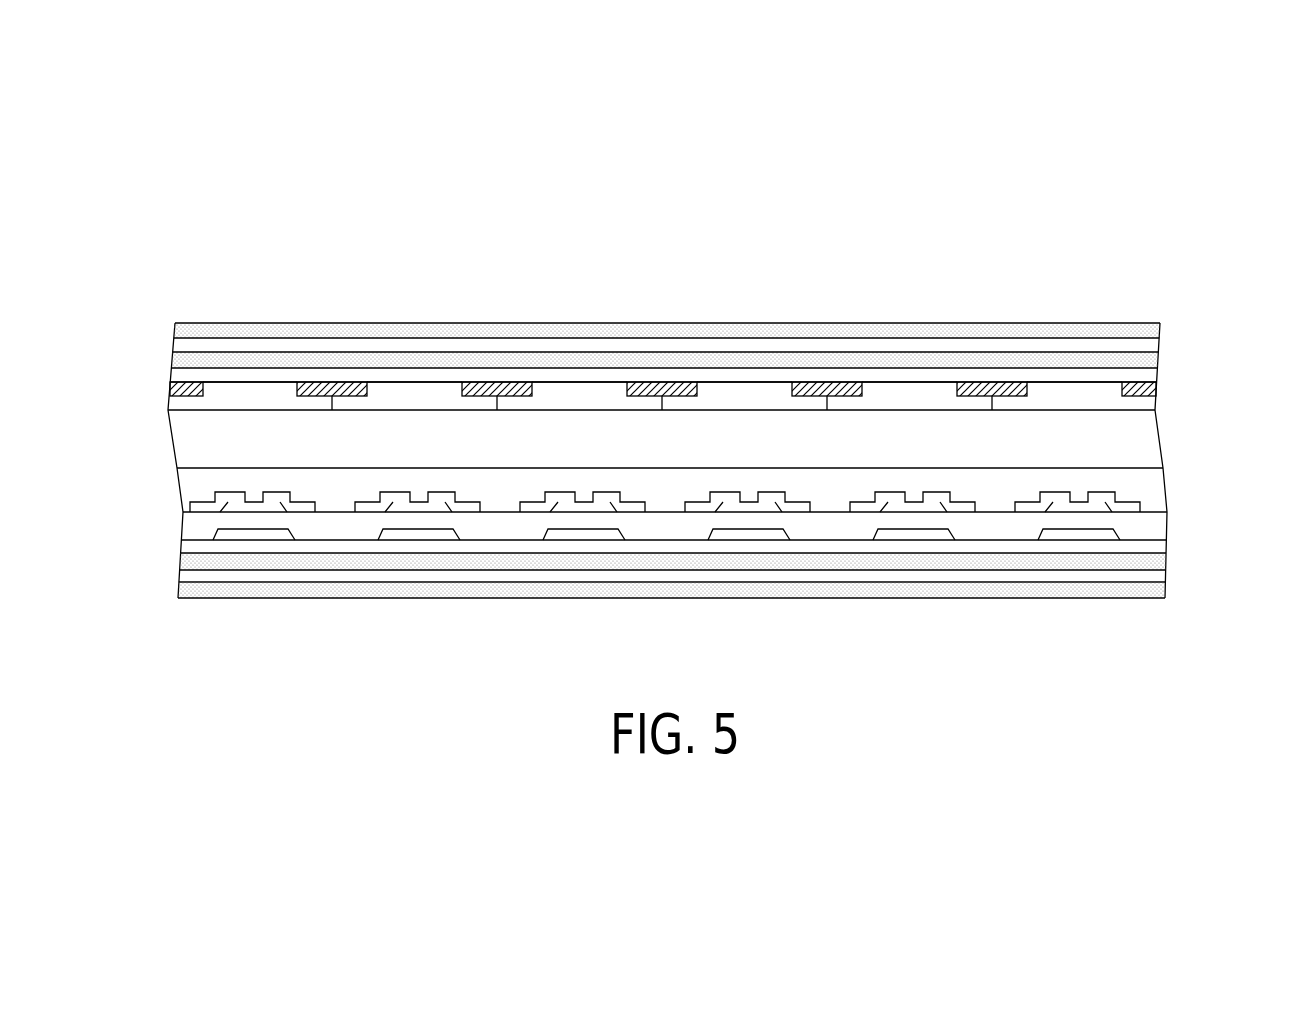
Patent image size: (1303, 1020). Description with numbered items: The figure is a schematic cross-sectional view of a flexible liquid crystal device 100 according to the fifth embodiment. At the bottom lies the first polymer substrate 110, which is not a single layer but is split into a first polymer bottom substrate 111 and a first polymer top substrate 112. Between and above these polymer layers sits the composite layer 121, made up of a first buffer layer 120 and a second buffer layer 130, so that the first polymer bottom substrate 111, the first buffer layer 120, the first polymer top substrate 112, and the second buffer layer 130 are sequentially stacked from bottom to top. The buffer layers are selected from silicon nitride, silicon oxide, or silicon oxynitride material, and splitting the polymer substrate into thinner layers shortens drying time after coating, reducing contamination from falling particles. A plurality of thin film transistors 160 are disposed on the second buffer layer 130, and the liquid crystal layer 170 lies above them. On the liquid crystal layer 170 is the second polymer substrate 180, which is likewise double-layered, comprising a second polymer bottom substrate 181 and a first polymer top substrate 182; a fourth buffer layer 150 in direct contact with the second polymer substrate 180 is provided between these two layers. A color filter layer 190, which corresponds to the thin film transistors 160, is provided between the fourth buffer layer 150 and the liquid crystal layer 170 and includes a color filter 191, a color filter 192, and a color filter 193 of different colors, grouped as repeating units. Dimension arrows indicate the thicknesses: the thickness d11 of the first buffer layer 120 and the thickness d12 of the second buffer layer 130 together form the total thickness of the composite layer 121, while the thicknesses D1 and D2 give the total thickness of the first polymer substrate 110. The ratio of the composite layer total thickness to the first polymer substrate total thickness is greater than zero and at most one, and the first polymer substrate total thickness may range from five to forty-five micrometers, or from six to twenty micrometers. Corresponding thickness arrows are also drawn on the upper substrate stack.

The flexible liquid crystal device 100 is at (192, 198).
The first polymer substrate 110 is at (736, 574).
The first polymer bottom substrate 111 is at (1158, 590).
The first polymer top substrate 112 is at (1156, 562).
The first buffer layer 120 is at (190, 575).
The composite layer 121 is at (608, 562).
The second buffer layer 130 is at (190, 547).
The fourth buffer layer 150 is at (1148, 342).
The thin film transistors 160 is at (198, 487).
The liquid crystal layer 170 is at (691, 449).
The second polymer substrate 180 is at (600, 345).
The second polymer bottom substrate 181 is at (176, 331).
The first polymer top substrate 182 is at (178, 360).
The color filter layer 190 is at (663, 309).
The color filter 191 is at (827, 329).
The color filter 192 is at (411, 393).
The color filter 193 is at (262, 393).
The thickness D1 is at (1135, 338).
The thickness D2 is at (1093, 352).
The thickness of the first buffer layer d11 is at (1113, 352).
The thickness of the second buffer layer d12 is at (1073, 368).